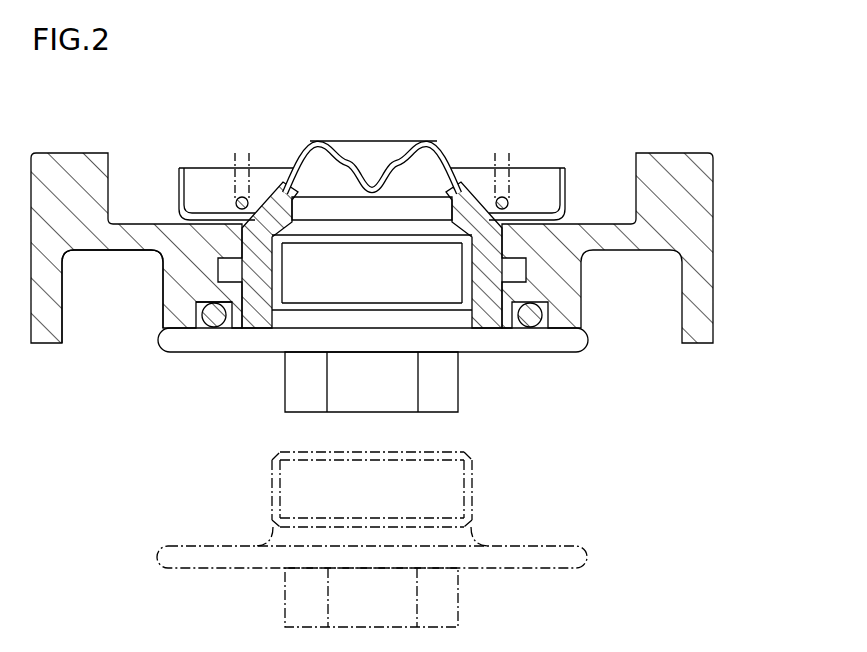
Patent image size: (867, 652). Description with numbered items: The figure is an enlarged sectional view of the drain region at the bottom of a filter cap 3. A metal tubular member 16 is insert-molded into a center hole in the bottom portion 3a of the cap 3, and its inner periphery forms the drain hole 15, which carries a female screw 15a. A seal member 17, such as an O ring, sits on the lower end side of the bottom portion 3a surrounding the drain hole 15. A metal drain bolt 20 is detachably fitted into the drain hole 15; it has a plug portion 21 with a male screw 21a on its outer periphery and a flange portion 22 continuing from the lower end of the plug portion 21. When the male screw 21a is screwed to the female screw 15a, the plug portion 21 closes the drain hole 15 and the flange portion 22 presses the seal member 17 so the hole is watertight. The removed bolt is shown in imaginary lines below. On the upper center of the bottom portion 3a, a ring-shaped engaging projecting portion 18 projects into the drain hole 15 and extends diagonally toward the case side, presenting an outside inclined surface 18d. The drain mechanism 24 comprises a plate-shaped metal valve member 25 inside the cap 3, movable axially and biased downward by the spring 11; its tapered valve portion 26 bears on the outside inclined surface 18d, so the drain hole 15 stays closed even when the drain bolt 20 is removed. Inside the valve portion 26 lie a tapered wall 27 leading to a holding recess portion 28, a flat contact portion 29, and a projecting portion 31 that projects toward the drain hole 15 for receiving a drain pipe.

The cap 3 is at (700, 166).
The bottom portion 3a is at (178, 288).
The spring 11 is at (508, 200).
The drain hole 15 is at (445, 300).
The female screw 15a is at (462, 305).
The tubular member 16 is at (265, 300).
The seal member 17 is at (548, 333).
The engaging projecting portion 18 is at (292, 272).
The outside inclined surface 18d is at (241, 197).
The drain bolt 20 is at (510, 355).
The plug portion 21 is at (222, 312).
The male screw 21a is at (212, 310).
The flange portion 22 is at (568, 340).
The drain mechanism 24 is at (595, 410).
The valve member 25 is at (172, 184).
The valve portion 26 is at (268, 200).
The tapered wall 27 is at (298, 165).
The holding recess portion 28 is at (323, 150).
The contact portion 29 is at (350, 160).
The projecting portion 31 is at (383, 165).